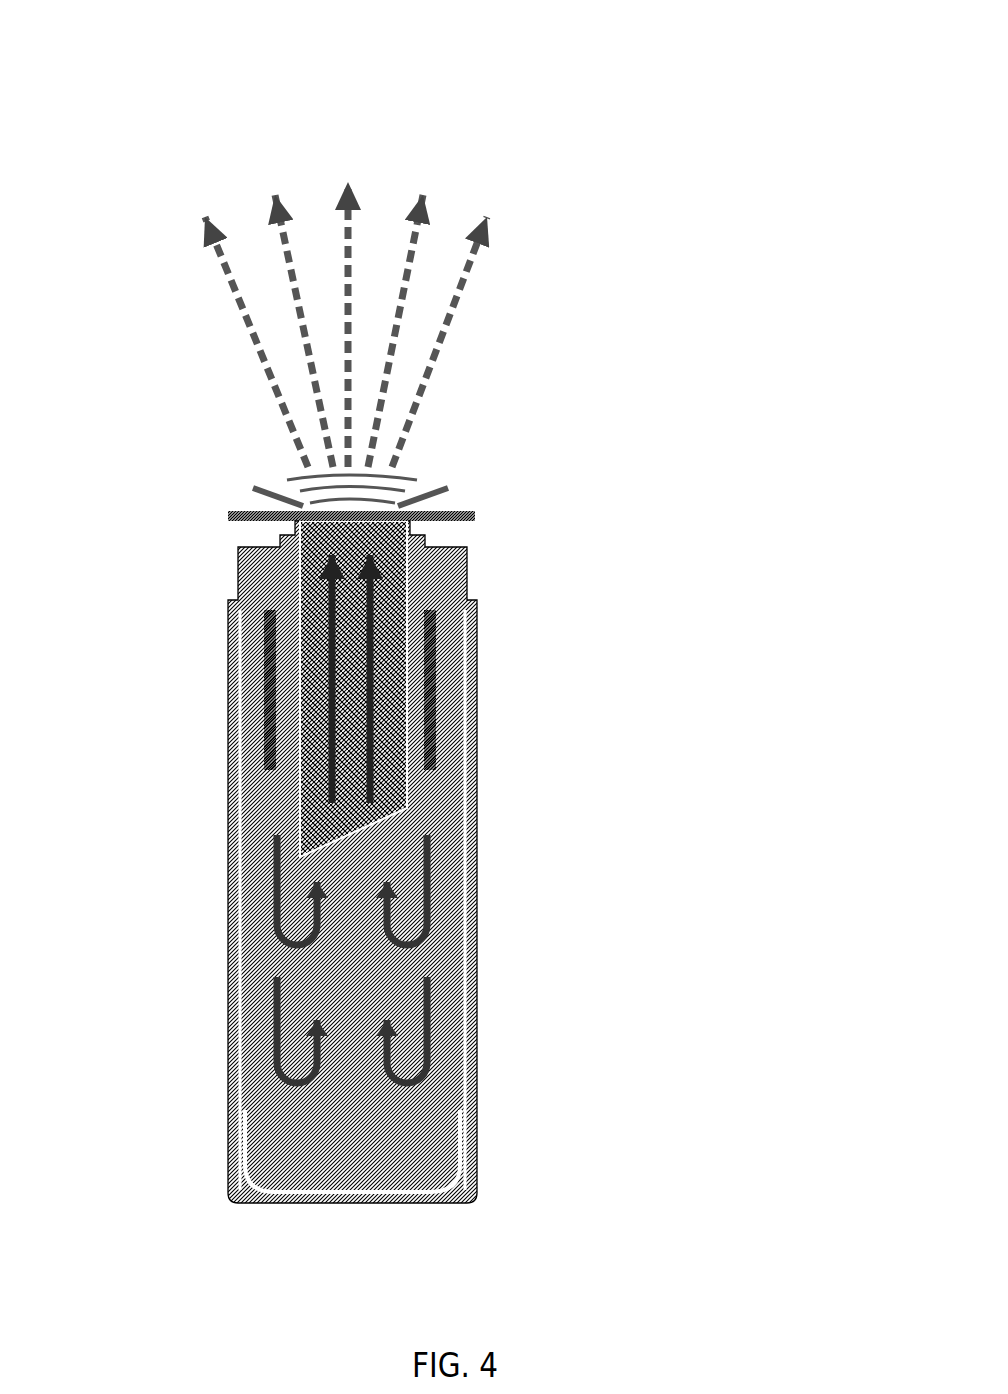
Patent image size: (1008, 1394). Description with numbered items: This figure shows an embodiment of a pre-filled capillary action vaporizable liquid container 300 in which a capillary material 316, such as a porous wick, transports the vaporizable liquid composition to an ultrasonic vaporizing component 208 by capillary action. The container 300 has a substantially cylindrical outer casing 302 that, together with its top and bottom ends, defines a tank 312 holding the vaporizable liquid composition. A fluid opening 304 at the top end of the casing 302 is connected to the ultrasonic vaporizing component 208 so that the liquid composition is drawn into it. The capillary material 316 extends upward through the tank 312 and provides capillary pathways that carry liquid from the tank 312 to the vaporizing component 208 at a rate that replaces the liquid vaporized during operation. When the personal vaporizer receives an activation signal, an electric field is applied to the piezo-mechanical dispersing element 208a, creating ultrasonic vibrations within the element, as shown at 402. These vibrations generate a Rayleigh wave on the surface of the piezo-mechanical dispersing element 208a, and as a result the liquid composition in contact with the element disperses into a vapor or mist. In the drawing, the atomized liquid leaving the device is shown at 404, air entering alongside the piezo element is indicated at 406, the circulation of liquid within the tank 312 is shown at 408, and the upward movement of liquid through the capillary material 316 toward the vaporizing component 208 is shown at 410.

The pre-filled container 300 is at (470, 602).
The outer casing 302 is at (453, 943).
The fluid opening 304 is at (315, 495).
The tank 312 is at (430, 825).
The capillary material 316 is at (390, 805).
The ultrasonic vaporizing component 208 is at (365, 517).
The piezo-mechanical dispersing element 208a is at (590, 517).
The ultrasonic vibrations 402 is at (712, 420).
The atomized liquid spray 404 is at (477, 282).
The air inlet 406 is at (257, 488).
The liquid flow arrows 408 is at (427, 1010).
The liquid transport arrows 410 is at (372, 667).